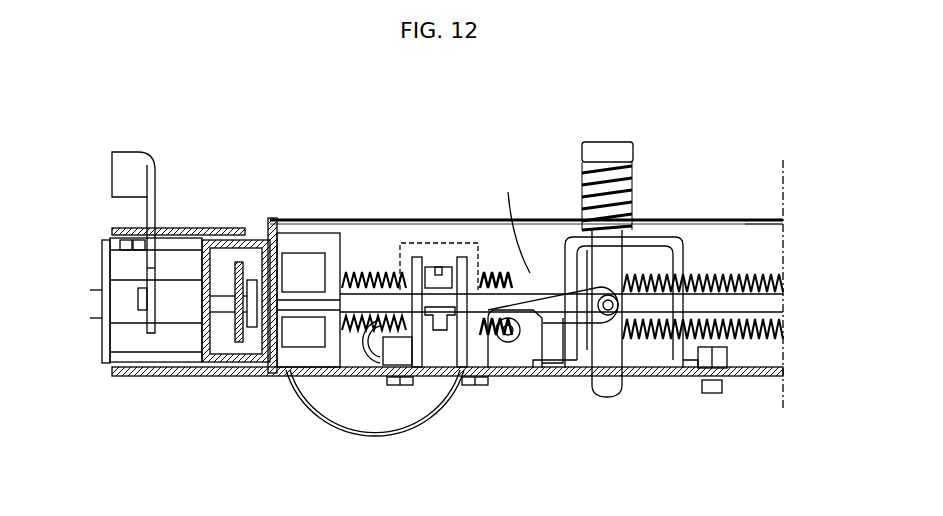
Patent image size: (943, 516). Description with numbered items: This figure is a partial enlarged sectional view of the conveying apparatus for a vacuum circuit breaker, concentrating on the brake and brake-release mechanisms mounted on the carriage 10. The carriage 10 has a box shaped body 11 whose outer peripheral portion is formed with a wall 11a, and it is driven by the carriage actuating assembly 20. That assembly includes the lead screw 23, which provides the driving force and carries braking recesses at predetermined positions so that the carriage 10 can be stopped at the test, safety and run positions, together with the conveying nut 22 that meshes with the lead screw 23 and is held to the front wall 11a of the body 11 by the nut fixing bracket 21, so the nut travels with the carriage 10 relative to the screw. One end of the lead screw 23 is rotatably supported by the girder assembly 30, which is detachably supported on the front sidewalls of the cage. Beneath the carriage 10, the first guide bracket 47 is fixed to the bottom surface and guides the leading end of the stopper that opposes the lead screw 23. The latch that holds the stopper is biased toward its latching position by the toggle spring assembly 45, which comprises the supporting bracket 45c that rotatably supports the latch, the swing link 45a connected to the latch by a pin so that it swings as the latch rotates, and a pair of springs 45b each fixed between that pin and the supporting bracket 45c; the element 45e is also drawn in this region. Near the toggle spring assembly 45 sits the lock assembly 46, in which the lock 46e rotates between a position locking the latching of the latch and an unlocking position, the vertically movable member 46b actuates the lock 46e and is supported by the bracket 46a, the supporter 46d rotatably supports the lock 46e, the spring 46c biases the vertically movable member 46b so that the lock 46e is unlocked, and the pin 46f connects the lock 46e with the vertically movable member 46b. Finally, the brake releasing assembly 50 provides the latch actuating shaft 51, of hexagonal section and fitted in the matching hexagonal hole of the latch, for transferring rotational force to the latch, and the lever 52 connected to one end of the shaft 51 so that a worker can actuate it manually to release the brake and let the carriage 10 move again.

The carriage 10 is at (695, 220).
The body 11 is at (655, 218).
The wall 11a is at (745, 238).
The carriage actuating assembly 20 is at (368, 268).
The nut fixing bracket 21 is at (320, 262).
The conveying nut 22 is at (326, 250).
The lead screw 23 is at (757, 277).
The girder assembly 30 is at (163, 375).
The toggle spring assembly 45 is at (462, 380).
The swing link 45a is at (397, 365).
The springs 45b is at (366, 340).
The supporting bracket 45c is at (418, 360).
The clutch stopper 45e is at (532, 335).
The lock assembly 46 is at (637, 358).
The bracket 46a is at (713, 392).
The vertically movable member 46b is at (603, 142).
The spring 46c is at (582, 173).
The supporter 46d is at (521, 384).
The lock 46e is at (510, 360).
The pin 46f is at (615, 392).
The first guide bracket 47 is at (447, 243).
The brake releasing assembly 50 is at (130, 303).
The latch actuating shaft 51 is at (770, 297).
The lever 52 is at (127, 185).